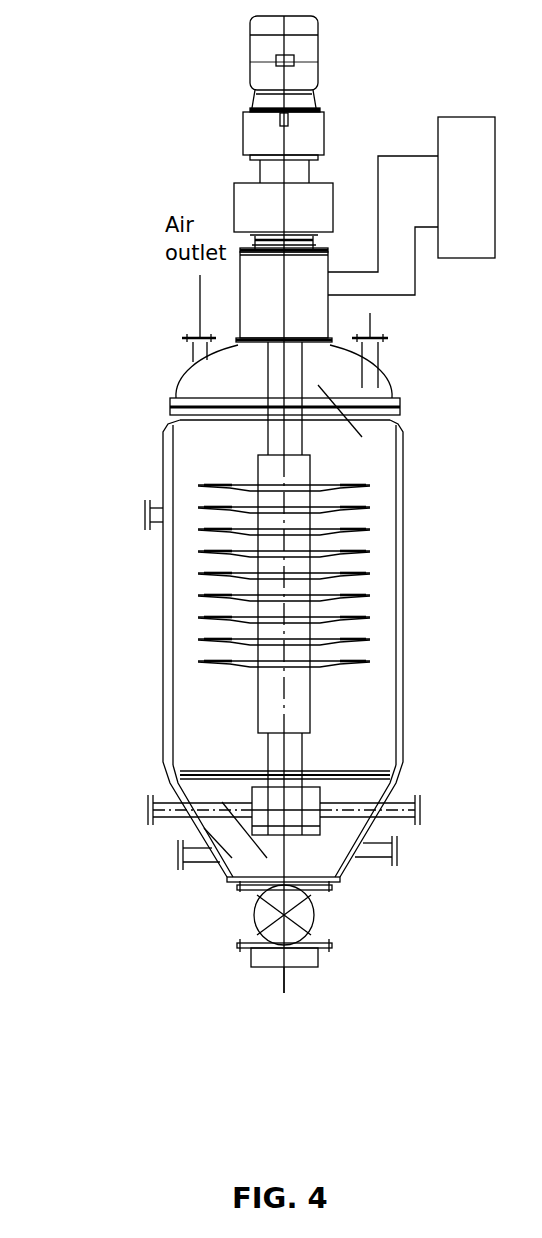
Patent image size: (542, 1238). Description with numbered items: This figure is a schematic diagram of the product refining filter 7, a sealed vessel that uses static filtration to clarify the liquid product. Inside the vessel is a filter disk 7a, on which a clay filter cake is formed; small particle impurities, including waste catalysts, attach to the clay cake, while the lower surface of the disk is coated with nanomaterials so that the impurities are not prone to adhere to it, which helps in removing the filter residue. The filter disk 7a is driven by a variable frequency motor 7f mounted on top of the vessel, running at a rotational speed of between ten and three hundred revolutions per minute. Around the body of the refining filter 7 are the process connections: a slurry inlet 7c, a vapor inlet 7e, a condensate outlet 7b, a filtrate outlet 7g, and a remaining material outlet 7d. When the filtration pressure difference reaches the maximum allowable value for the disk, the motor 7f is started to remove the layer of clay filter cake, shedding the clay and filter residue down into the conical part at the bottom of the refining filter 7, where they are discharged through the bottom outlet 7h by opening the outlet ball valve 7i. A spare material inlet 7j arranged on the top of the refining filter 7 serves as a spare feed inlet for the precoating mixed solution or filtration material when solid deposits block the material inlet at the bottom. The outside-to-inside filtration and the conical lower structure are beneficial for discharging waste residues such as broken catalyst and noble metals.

The refining filter 7 is at (352, 617).
The filter disk 7a is at (368, 593).
The condensate outlet 7b is at (178, 855).
The slurry inlet 7c is at (148, 810).
The remaining material outlet 7d is at (397, 850).
The vapor inlet 7e is at (145, 515).
The variable frequency motor 7f is at (219, 98).
The filtrate outlet 7g is at (420, 810).
The bottom outlet 7h is at (284, 996).
The outlet ball valve 7i is at (320, 915).
The spare material inlet 7j is at (370, 313).